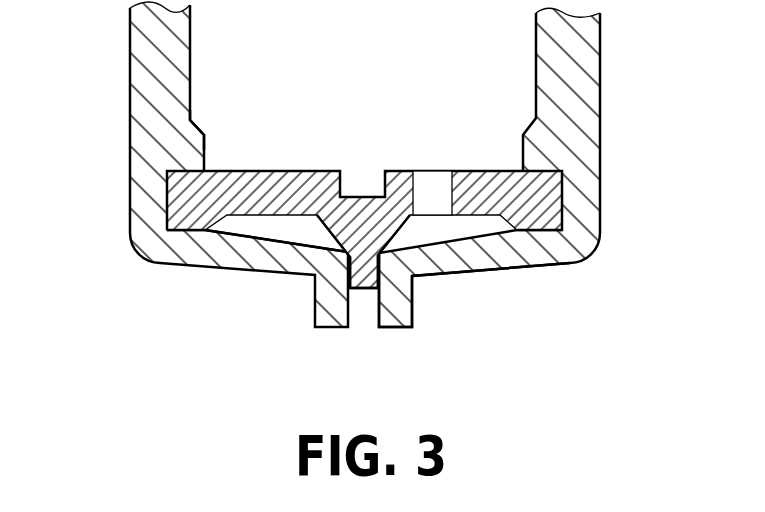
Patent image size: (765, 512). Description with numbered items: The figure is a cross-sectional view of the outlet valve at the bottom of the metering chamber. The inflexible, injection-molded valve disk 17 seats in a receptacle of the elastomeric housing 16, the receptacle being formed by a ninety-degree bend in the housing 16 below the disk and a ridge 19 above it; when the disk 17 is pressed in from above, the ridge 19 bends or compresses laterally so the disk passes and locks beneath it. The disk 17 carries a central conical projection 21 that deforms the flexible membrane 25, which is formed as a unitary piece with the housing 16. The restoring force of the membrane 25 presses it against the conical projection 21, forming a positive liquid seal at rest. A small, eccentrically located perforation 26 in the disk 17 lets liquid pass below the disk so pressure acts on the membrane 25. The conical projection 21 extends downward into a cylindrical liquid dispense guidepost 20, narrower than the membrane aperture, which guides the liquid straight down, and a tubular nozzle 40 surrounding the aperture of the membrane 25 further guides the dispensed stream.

The housing 16 is at (583, 153).
The valve disk 17 is at (165, 186).
The ridge 19 is at (197, 130).
The liquid dispense guidepost 20 is at (355, 289).
The central conical projection 21 is at (310, 240).
The flexible membrane 25 is at (413, 277).
The perforation 26 is at (435, 178).
The tubular nozzle 40 is at (410, 326).